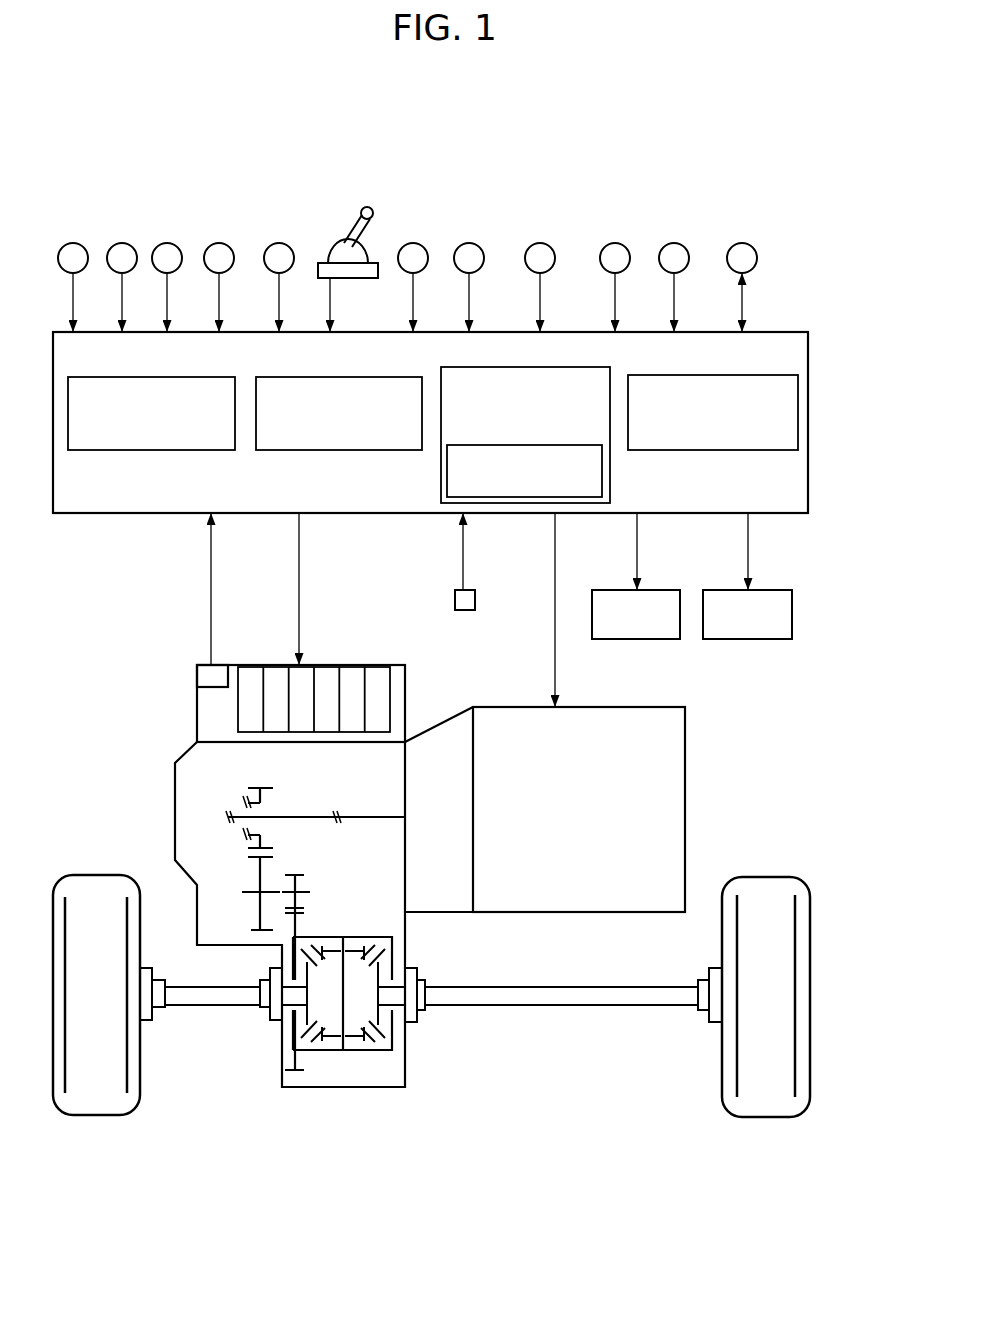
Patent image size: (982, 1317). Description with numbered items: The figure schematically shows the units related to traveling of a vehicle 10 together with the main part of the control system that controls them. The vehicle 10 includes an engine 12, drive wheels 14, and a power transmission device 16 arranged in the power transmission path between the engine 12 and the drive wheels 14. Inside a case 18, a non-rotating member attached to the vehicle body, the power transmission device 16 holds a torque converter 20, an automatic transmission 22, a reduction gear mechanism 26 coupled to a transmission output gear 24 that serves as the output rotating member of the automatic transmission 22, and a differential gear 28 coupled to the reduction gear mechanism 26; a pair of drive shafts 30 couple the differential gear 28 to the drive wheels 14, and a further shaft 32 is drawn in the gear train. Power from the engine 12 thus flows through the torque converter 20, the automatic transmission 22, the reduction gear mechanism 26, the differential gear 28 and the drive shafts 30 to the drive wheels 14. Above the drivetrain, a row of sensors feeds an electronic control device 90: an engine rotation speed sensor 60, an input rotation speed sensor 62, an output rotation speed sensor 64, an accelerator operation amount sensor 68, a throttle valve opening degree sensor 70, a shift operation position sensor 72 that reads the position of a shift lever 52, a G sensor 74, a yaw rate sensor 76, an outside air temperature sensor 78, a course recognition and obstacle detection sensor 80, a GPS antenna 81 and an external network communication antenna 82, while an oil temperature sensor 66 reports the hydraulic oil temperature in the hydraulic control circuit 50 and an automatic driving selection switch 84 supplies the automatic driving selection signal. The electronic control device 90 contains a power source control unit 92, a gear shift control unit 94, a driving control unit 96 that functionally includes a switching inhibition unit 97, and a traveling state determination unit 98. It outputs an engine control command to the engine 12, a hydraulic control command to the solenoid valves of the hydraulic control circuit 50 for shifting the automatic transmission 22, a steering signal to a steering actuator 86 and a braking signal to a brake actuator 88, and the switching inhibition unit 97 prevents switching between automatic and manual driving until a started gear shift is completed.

The vehicle 10 is at (753, 180).
The engine 12 is at (573, 720).
The drive wheels 14 is at (90, 887).
The power transmission device 16 is at (155, 692).
The case 18 is at (187, 757).
The torque converter 20 is at (440, 748).
The automatic transmission 22 is at (198, 823).
The transmission output gear 24 is at (257, 788).
The reduction gear mechanism 26 is at (314, 877).
The differential gear 28 is at (357, 1063).
The drive shafts 30 is at (182, 997).
The output shaft 32 is at (392, 810).
The hydraulic control circuit 50 is at (397, 672).
The shift lever 52 is at (353, 226).
The engine rotation speed sensor 60 is at (77, 250).
The input rotation speed sensor 62 is at (126, 250).
The output rotation speed sensor 64 is at (171, 250).
The oil temperature sensor 66 is at (218, 673).
The accelerator operation amount sensor 68 is at (223, 250).
The throttle valve opening degree sensor 70 is at (283, 250).
The shift operation position sensor 72 is at (341, 259).
The G sensor 74 is at (417, 250).
The yaw rate sensor 76 is at (473, 250).
The outside air temperature sensor 78 is at (544, 250).
The course recognition and obstacle detection sensor 80 is at (619, 250).
The GPS antenna 81 is at (678, 250).
The external network communication antenna 82 is at (746, 250).
The automatic driving selection switch 84 is at (465, 610).
The steering actuator 86 is at (623, 639).
The brake actuator 88 is at (735, 639).
The electronic control device 90 is at (349, 513).
The power source control unit 92 is at (183, 383).
The gear shift control unit 94 is at (372, 383).
The driving control unit 96 is at (551, 375).
The switching inhibition unit 97 is at (551, 446).
The traveling state determination unit 98 is at (740, 381).